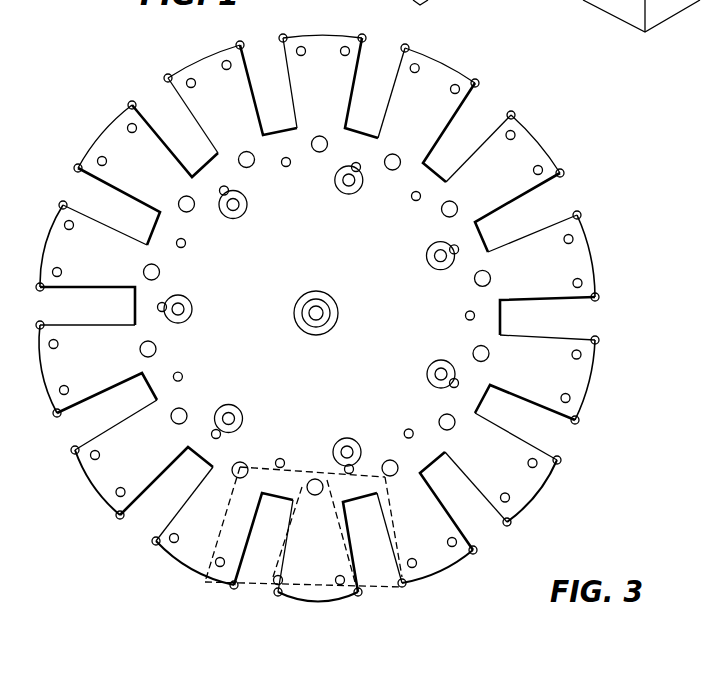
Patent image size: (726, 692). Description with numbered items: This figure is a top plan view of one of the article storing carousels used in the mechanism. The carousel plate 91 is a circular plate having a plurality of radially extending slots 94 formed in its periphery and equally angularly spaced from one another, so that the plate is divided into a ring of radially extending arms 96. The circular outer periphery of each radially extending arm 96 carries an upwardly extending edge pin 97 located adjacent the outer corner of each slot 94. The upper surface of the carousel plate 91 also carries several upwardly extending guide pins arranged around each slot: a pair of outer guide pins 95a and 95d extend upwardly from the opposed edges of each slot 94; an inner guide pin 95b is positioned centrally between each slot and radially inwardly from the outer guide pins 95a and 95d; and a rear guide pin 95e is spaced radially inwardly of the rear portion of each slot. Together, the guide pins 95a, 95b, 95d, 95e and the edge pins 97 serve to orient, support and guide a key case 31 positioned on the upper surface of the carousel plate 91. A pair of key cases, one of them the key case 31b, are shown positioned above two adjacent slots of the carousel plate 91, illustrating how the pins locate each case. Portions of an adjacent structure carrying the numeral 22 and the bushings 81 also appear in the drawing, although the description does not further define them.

The rotary indexing table hub 91 is at (393, 312).
The tool holder block 96 is at (238, 118).
The connecting strip 97 is at (232, 43).
The fastening screw 94 is at (166, 106).
The pivot bushing 81 is at (237, 218).
The locating pin hole 95a is at (96, 451).
The mounting bore 95b is at (156, 349).
The locating pin hole 95d is at (68, 388).
The locating pin hole 95e is at (185, 244).
The work station (phantom) 31 is at (280, 460).
The work station arm 31b is at (445, 1).
The frame 22 is at (582, 6).